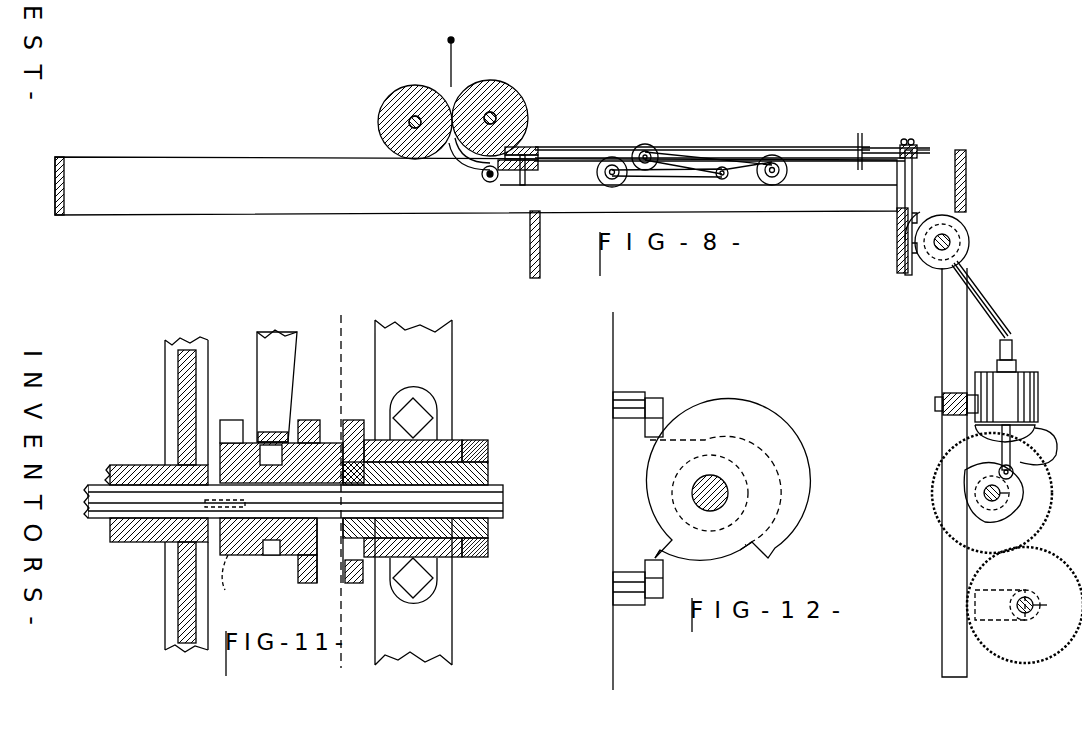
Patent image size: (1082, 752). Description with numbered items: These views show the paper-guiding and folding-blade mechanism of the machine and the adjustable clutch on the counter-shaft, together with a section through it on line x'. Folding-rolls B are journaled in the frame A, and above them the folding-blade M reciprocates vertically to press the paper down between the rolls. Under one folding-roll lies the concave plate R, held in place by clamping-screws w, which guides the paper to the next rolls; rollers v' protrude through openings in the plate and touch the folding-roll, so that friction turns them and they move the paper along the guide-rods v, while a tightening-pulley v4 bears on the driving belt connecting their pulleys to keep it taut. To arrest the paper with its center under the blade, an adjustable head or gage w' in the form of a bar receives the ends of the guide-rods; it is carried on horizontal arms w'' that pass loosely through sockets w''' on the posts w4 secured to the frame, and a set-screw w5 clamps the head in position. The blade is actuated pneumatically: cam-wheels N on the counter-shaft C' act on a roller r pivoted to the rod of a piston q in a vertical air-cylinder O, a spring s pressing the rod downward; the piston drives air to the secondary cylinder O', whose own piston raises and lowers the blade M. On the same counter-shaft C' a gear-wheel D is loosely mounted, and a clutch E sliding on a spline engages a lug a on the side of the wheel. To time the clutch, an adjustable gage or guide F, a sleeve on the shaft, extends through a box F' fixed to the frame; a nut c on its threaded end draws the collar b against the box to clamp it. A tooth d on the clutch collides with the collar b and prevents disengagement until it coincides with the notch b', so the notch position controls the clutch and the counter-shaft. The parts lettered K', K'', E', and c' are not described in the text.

In FIG. 8, the frame A is at (511, 413).
In FIG. 11, the frame A is at (413, 492).
In FIG. 8, the folding-roll B is at (453, 119).
In FIG. 8, the folding-blade M is at (454, 74).
In FIG. 8, the concave plate R is at (460, 165).
In FIG. 8, the slide block K' is at (526, 171).
In FIG. 8, the rod K'' is at (702, 140).
In FIG. 8, the clamping-screw w is at (512, 179).
In FIG. 8, the roller v' is at (643, 180).
In FIG. 8, the tightening-pulley v4 is at (648, 144).
In FIG. 8, the guide-rod v is at (720, 153).
In FIG. 8, the adjustable head or gage w' is at (861, 141).
In FIG. 8, the horizontal arm w'' is at (896, 139).
In FIG. 8, the set-screw w5 is at (915, 144).
In FIG. 8, the socket w''' is at (933, 162).
In FIG. 8, the post w4 is at (905, 192).
In FIG. 8, the secondary cylinder O' is at (950, 240).
In FIG. 8, the air-cylinder O is at (986, 351).
In FIG. 8, the spring s is at (1045, 446).
In FIG. 8, the piston q is at (1002, 456).
In FIG. 8, the roller r is at (1013, 472).
In FIG. 8, the gear-wheel D is at (1052, 500).
In FIG. 11, the gear-wheel D is at (200, 385).
In FIG. 8, the cam-wheel N is at (993, 493).
In FIG. 8, the counter-shaft C' is at (1024, 569).
In FIG. 11, the counter-shaft C' is at (293, 501).
In FIG. 12, the counter-shaft C' is at (710, 493).
In FIG. 11, the lever arm E' is at (277, 386).
In FIG. 11, the clutch E is at (281, 487).
In FIG. 11, the rigid projection or lug a is at (220, 565).
In FIG. 11, the tooth d is at (312, 583).
In FIG. 11, the collar b is at (340, 501).
In FIG. 12, the collar b is at (728, 480).
In FIG. 11, the box F' is at (415, 462).
In FIG. 11, the nut c is at (475, 451).
In FIG. 11, the adjustable gage or guide F is at (415, 537).
In FIG. 12, the adjustable gage or guide F is at (715, 481).
In FIG. 11, the ring c' is at (475, 547).
In FIG. 11, the notch b' is at (354, 571).
In FIG. 12, the notch b' is at (703, 559).
In FIG. 11, the section line X' X' x' is at (344, 476).